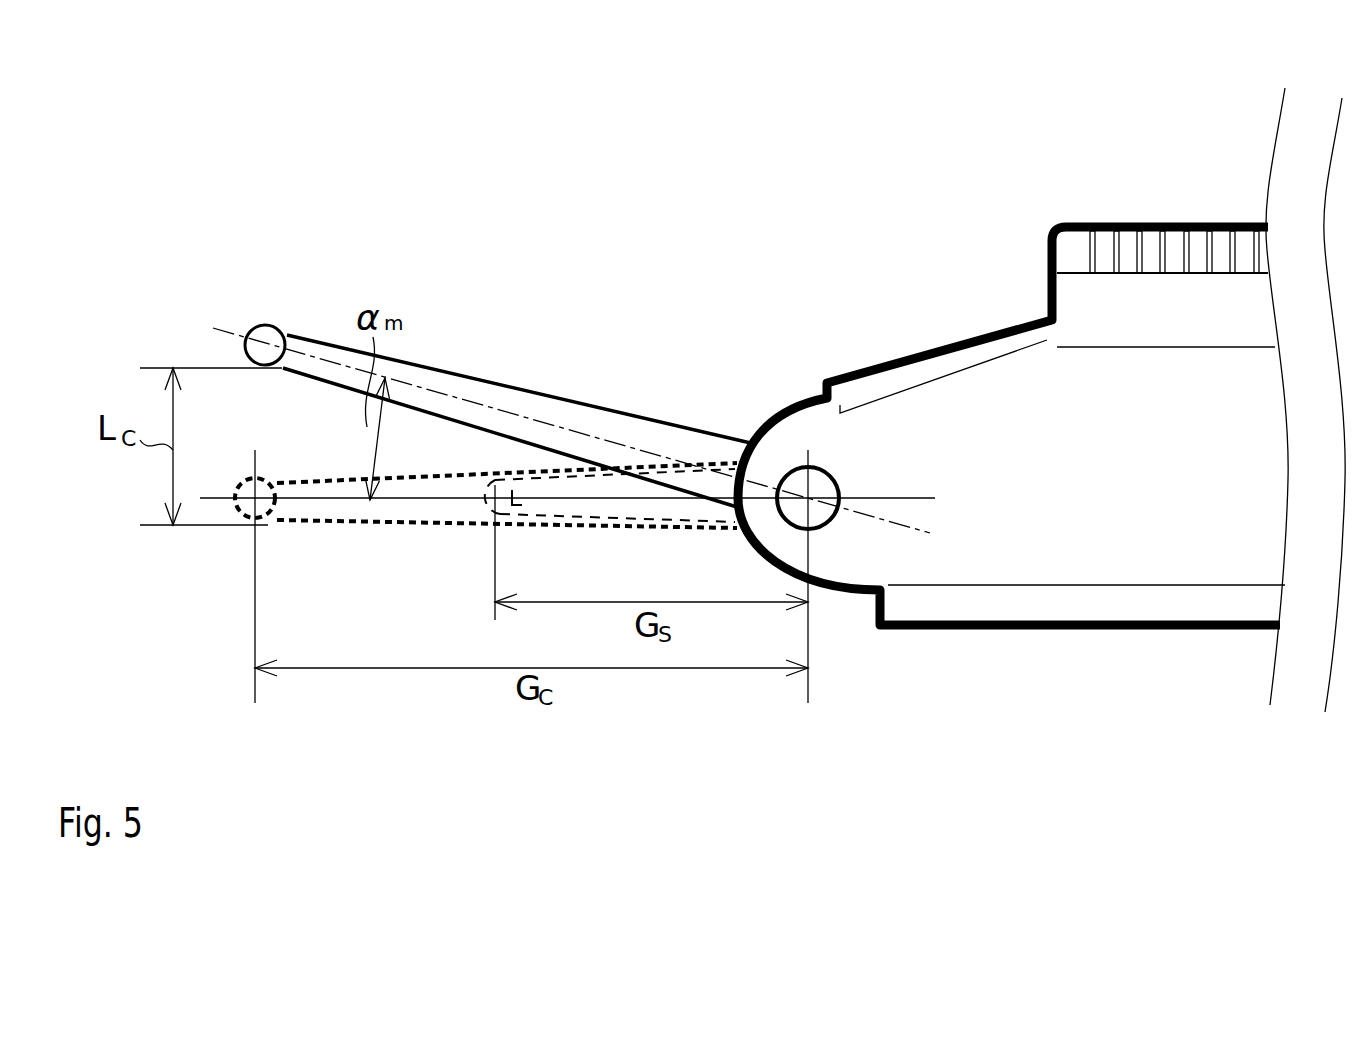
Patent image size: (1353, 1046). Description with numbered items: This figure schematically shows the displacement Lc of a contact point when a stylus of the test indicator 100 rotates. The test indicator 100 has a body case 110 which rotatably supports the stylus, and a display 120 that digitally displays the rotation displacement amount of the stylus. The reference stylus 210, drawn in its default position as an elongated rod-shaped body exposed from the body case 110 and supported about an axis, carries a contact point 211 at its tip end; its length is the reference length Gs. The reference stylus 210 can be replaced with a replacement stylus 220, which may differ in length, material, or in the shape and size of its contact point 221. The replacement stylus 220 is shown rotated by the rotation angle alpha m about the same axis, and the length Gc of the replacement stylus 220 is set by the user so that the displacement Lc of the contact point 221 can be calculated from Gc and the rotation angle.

The test indicator 100 is at (978, 182).
The body case 110 is at (960, 388).
The display 120 is at (1153, 248).
The stylus 210 is at (652, 512).
The contact point 211 is at (480, 525).
The replacement stylus 220 is at (535, 393).
The contact point 221 is at (272, 327).